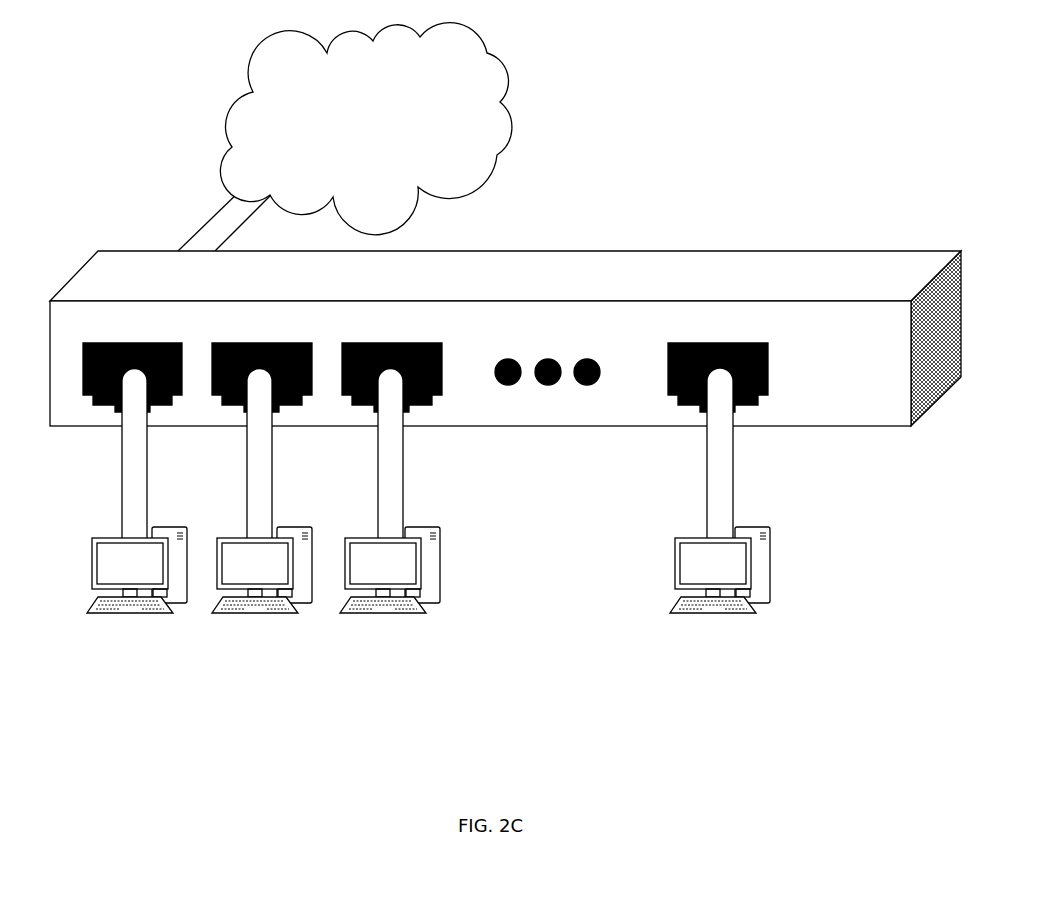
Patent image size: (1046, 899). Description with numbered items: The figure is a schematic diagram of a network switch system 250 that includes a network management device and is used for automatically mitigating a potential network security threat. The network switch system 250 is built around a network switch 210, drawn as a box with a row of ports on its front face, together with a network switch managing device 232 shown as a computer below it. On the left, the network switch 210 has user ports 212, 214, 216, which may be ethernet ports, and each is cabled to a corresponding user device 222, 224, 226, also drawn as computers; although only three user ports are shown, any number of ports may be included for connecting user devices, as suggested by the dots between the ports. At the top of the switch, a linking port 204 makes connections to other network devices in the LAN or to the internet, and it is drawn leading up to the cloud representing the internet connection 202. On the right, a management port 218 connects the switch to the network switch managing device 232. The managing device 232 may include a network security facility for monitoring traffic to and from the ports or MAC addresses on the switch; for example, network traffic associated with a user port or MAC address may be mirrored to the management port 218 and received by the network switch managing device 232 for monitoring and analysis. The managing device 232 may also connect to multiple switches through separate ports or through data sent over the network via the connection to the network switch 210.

The network switch system 250 is at (150, 100).
The internet connection 202 is at (500, 150).
The linking port 204 is at (192, 235).
The network switch 210 is at (800, 430).
The user port 212 is at (170, 340).
The user port 214 is at (298, 340).
The user port 216 is at (430, 340).
The management port 218 is at (750, 340).
The user device 222 is at (102, 615).
The user device 224 is at (227, 615).
The user device 226 is at (353, 615).
The network switch managing device 232 is at (682, 617).